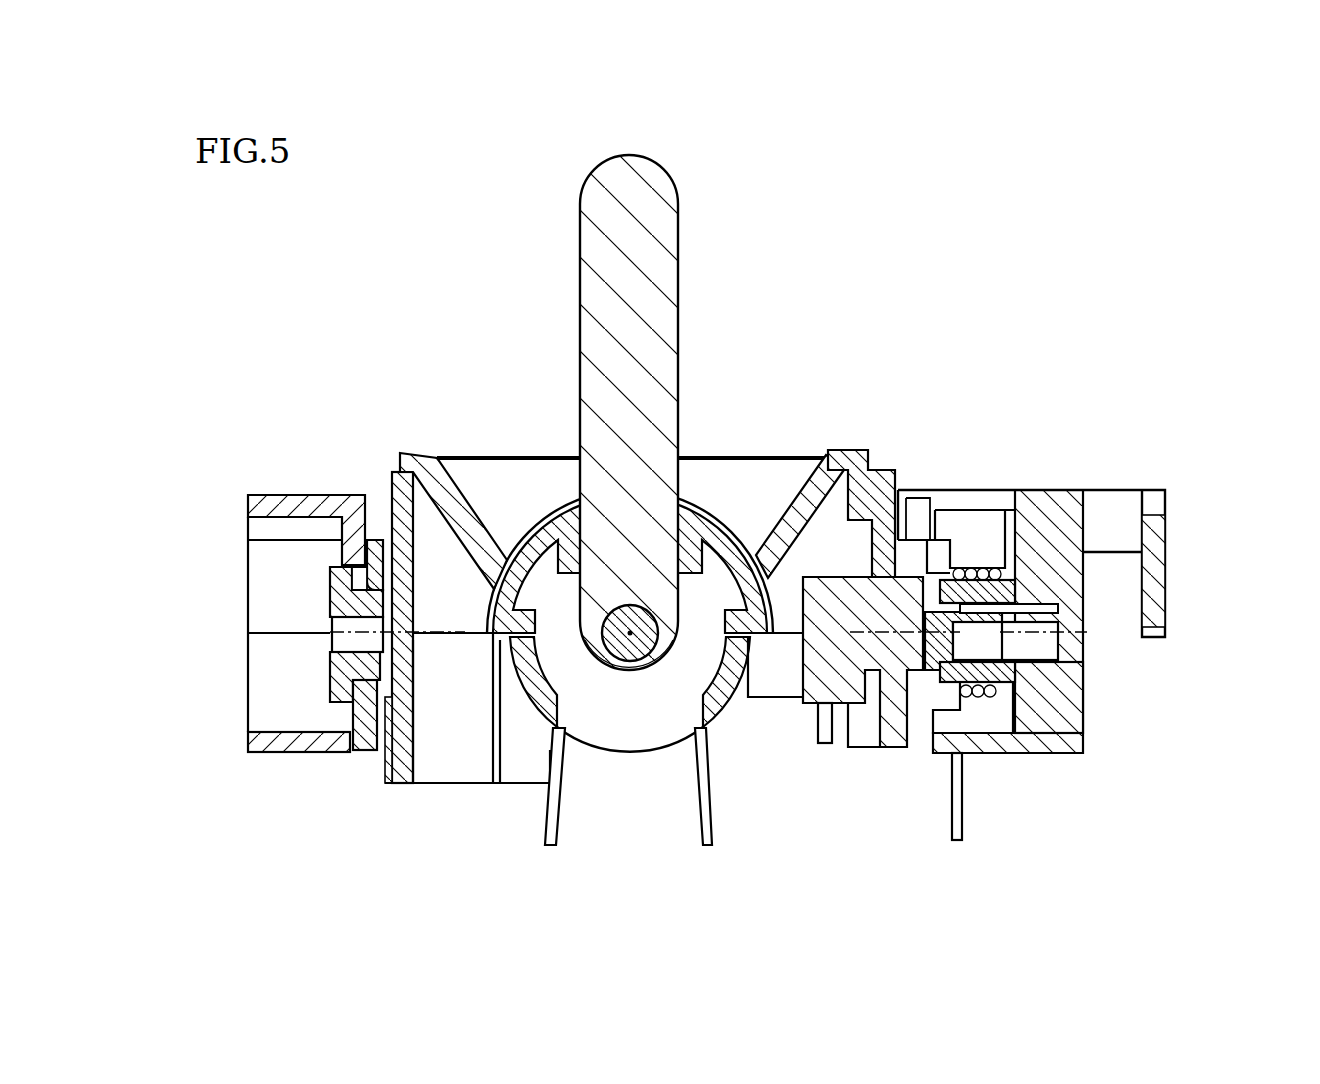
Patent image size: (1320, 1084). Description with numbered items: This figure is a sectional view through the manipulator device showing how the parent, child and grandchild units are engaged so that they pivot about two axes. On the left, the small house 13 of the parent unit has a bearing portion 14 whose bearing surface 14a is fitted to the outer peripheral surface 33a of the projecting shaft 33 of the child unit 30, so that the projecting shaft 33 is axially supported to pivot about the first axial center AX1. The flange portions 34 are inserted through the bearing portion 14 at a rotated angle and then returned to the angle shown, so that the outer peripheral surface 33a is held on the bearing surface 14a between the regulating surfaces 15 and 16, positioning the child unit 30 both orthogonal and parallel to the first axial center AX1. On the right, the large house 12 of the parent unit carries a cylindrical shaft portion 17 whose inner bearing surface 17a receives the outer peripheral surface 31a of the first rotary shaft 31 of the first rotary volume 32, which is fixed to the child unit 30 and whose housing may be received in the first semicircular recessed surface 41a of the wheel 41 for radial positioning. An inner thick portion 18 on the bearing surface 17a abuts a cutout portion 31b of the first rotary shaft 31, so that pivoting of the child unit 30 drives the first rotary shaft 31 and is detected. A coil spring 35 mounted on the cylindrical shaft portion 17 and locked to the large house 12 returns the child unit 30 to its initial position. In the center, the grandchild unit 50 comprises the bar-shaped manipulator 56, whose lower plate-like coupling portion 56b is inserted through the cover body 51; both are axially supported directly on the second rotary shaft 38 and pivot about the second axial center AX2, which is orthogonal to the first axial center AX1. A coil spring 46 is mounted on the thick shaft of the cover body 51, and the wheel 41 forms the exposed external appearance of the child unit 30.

The large house 12 is at (1033, 505).
The small house 13 is at (318, 495).
The bearing portion 14 is at (413, 585).
The bearing surface 14a is at (447, 640).
The regulating surface 15 is at (358, 568).
The regulating surface 16 is at (374, 560).
The cylindrical shaft portion 17 is at (1068, 712).
The bearing surface 17a is at (889, 515).
The inner thick portion 18 is at (1060, 652).
The child unit 30 is at (870, 447).
The first rotary shaft 31 is at (935, 652).
The outer peripheral surface 31a is at (957, 600).
The cutout portion 31b is at (982, 612).
The first rotary volume 32 is at (803, 590).
The projecting shaft 33 is at (340, 658).
The outer peripheral surface 33a is at (356, 708).
The flange portion 34 is at (333, 572).
The coil spring 35 is at (957, 841).
The second rotary shaft 38 is at (618, 661).
The wheel 41 is at (432, 458).
The first semicircular recessed surface 41a is at (846, 470).
The coil spring 46 is at (708, 847).
The grandchild unit 50 is at (564, 494).
The cover body 51 is at (715, 716).
The manipulator 56 is at (678, 276).
The coupling portion 56b is at (637, 676).
The first axial center AX1 is at (330, 632).
The second axial center AX2 is at (630, 631).